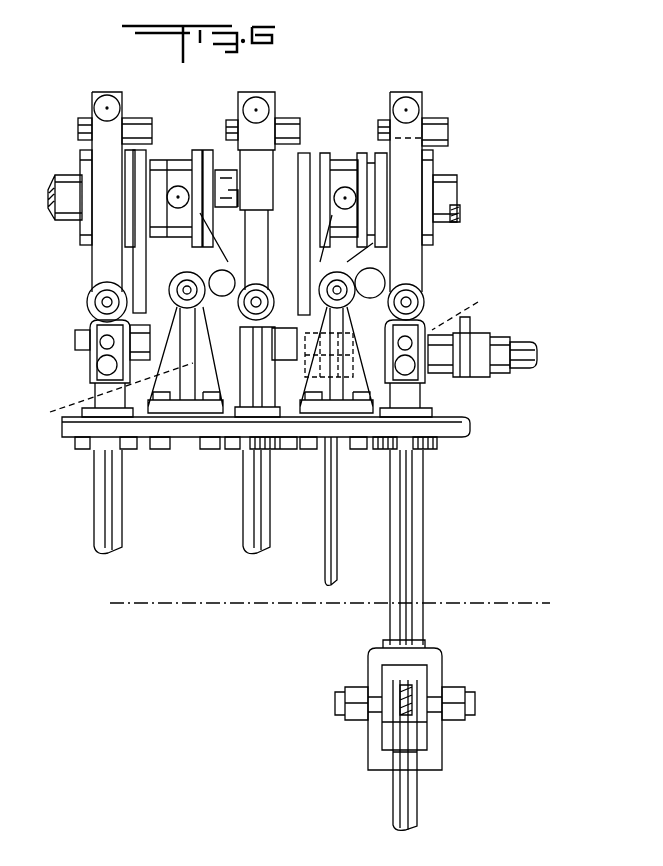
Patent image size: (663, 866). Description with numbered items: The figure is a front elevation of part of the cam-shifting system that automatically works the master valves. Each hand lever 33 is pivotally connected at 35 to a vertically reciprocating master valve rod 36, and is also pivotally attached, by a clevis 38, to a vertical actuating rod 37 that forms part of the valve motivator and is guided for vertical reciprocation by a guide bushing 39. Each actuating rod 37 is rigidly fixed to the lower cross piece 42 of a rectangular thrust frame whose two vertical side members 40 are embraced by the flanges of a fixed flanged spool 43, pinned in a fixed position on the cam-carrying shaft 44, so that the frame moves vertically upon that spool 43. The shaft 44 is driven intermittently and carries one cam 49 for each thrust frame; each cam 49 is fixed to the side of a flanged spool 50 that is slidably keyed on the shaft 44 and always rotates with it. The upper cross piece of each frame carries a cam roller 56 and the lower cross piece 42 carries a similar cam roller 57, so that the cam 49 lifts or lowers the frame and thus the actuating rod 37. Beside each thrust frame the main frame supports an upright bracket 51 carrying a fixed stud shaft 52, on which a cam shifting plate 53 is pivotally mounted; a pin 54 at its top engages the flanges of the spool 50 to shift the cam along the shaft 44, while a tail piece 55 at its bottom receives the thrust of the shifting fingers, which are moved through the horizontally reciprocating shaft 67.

The hand lever 33 is at (400, 700).
The pivotal connection 35 is at (455, 697).
The master valve rod 36 is at (400, 790).
The actuating rod 37 is at (118, 500).
The clevis 38 is at (432, 665).
The guide bushing 39 is at (225, 449).
The vertical side member 40 is at (133, 266).
The lower cross piece 42 is at (462, 322).
The collar 43 is at (80, 160).
The cam-carrying shaft 44 is at (60, 218).
The cam 49 is at (169, 290).
The flanged spool 50 is at (176, 187).
The upright bracket 51 is at (130, 375).
The stud shaft 52 is at (90, 310).
The cam shifting plate 53 is at (460, 214).
The pin 54 is at (186, 165).
The tail piece 55 is at (265, 356).
The cam roller 56 is at (140, 120).
The cam roller 57 is at (138, 340).
The reciprocating shaft 67 is at (522, 355).